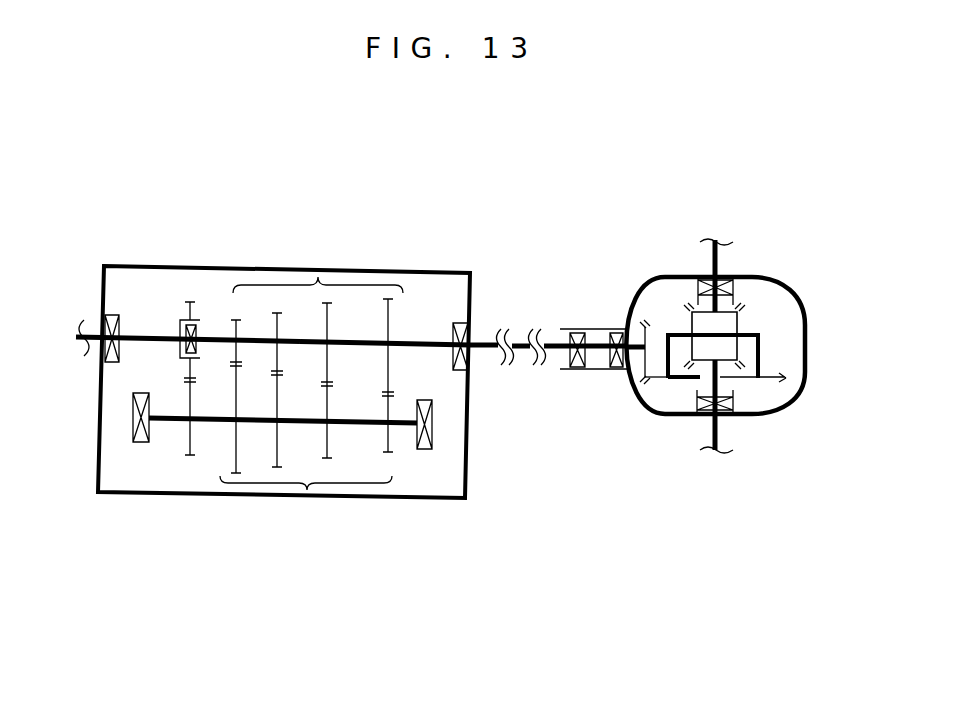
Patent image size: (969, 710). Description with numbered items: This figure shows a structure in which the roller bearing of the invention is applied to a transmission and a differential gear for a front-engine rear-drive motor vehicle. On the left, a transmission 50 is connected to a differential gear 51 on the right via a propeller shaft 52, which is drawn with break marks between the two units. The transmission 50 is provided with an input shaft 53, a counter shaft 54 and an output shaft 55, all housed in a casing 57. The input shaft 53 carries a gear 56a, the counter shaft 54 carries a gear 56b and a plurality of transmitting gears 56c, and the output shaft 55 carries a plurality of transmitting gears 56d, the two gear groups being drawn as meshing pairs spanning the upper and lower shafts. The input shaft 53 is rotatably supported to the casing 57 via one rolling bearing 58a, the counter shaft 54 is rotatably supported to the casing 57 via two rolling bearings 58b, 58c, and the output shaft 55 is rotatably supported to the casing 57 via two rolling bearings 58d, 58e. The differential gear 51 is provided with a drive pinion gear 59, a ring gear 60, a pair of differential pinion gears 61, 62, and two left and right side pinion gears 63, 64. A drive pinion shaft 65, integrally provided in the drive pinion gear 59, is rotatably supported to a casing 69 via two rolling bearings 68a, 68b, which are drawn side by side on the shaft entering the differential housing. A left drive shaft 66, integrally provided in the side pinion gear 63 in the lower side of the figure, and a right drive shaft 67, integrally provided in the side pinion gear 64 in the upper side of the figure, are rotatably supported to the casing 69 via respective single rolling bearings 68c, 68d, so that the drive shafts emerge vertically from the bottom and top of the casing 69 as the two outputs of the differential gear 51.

The transmission 50 is at (260, 252).
The differential gear 51 is at (668, 262).
The propeller shaft 52 is at (522, 352).
The input shaft 53 is at (152, 333).
The counter shaft 54 is at (360, 428).
The output shaft 55 is at (420, 340).
The gear 56a is at (186, 318).
The gear 56b is at (190, 430).
The transmitting gears 56c is at (308, 491).
The transmitting gears 56d is at (318, 280).
The casing 57 is at (437, 270).
The rolling bearing 58a is at (110, 364).
The rolling bearing 58b is at (143, 443).
The rolling bearing 58c is at (424, 450).
The rolling bearing 58d is at (458, 372).
The rolling bearing 58e is at (199, 330).
The drive pinion gear 59 is at (634, 332).
The ring gear 60 is at (687, 380).
The differential pinion gear 61 is at (688, 318).
The differential pinion gear 62 is at (743, 328).
The side pinion gear 63 is at (732, 362).
The side pinion gear 64 is at (731, 313).
The drive pinion shaft 65 is at (595, 353).
The left drive shaft 66 is at (702, 432).
The right drive shaft 67 is at (718, 262).
The rolling bearing 68a is at (572, 368).
The rolling bearing 68b is at (615, 330).
The rolling bearing 68c is at (720, 413).
The rolling bearing 68d is at (707, 278).
The casing 69 is at (805, 342).